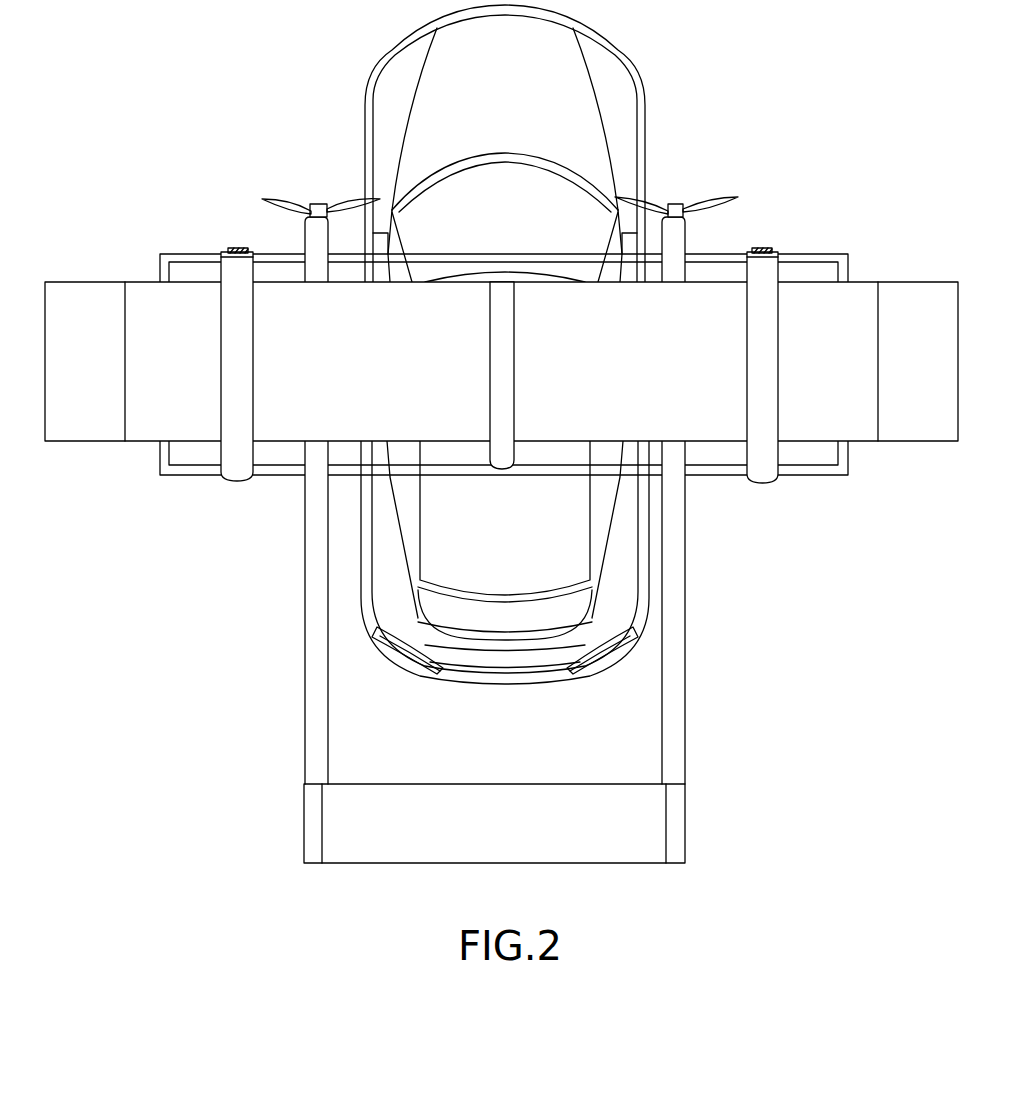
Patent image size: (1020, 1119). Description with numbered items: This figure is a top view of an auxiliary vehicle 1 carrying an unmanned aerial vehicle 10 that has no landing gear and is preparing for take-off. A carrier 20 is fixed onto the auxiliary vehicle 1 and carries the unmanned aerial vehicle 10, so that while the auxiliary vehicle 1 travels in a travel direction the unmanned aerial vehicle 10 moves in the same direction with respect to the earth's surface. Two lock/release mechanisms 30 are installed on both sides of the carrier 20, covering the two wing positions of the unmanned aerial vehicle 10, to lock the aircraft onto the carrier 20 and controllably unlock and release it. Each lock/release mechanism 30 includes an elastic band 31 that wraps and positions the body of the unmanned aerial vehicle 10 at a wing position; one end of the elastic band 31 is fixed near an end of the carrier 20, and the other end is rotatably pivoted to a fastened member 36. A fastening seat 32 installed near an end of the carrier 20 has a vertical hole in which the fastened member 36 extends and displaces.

The auxiliary vehicle 1 is at (640, 143).
The unmanned aerial vehicle 10 is at (153, 292).
The carrier 20 is at (850, 258).
The lock/release mechanism 30 is at (241, 247).
The elastic band 31 is at (224, 250).
The fastening seat 32 is at (247, 248).
The fastened member 36 is at (237, 248).